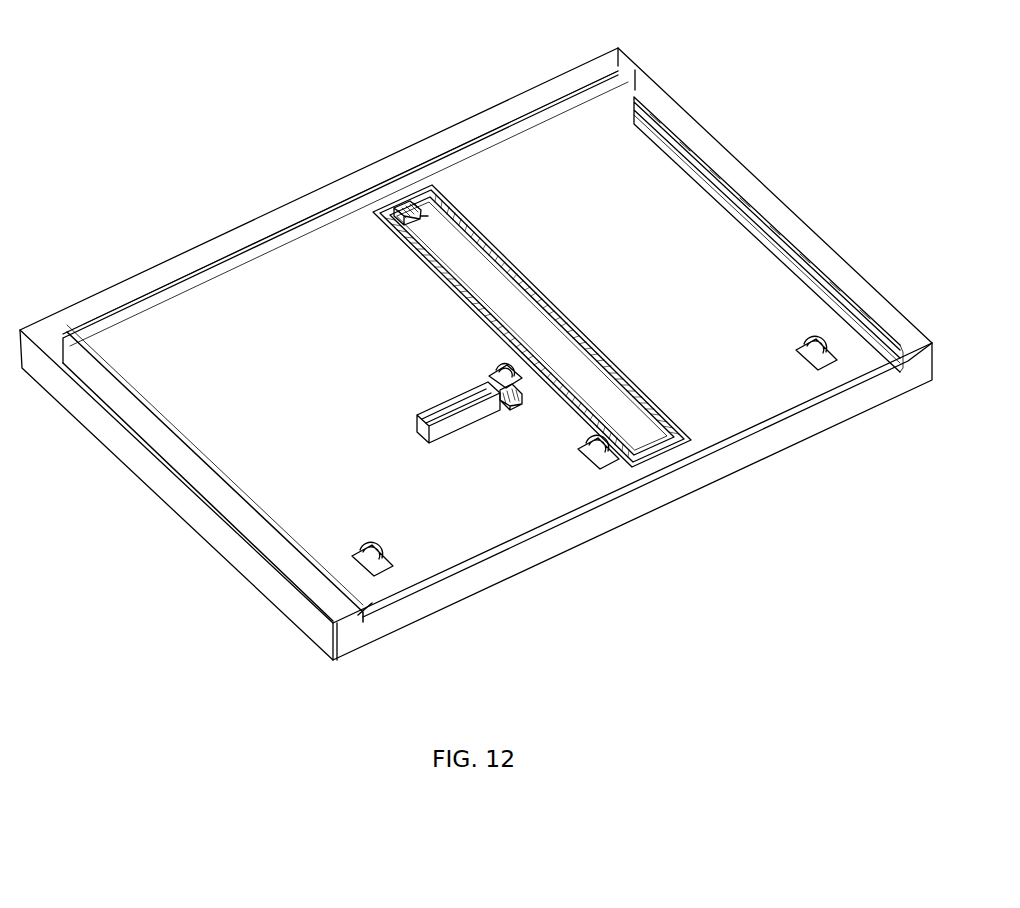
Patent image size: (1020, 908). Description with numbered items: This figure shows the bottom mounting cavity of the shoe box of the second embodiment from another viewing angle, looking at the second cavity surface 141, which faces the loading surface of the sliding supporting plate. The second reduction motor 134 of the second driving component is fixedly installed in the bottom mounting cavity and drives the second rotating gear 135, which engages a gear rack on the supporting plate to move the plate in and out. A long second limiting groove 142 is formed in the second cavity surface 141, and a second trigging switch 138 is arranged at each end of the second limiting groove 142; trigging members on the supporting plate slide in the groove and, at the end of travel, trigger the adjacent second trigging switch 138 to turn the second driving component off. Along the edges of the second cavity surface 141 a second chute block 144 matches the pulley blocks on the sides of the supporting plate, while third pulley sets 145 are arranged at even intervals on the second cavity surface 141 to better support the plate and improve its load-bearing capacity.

The second reduction motor 134 is at (462, 410).
The second rotating gear 135 is at (510, 400).
The second trigging switch 138 is at (405, 206).
The second cavity surface 141 is at (700, 238).
The second limiting groove 142 is at (548, 294).
The second chute block 144 is at (598, 80).
The third pulley set 145 is at (497, 363).